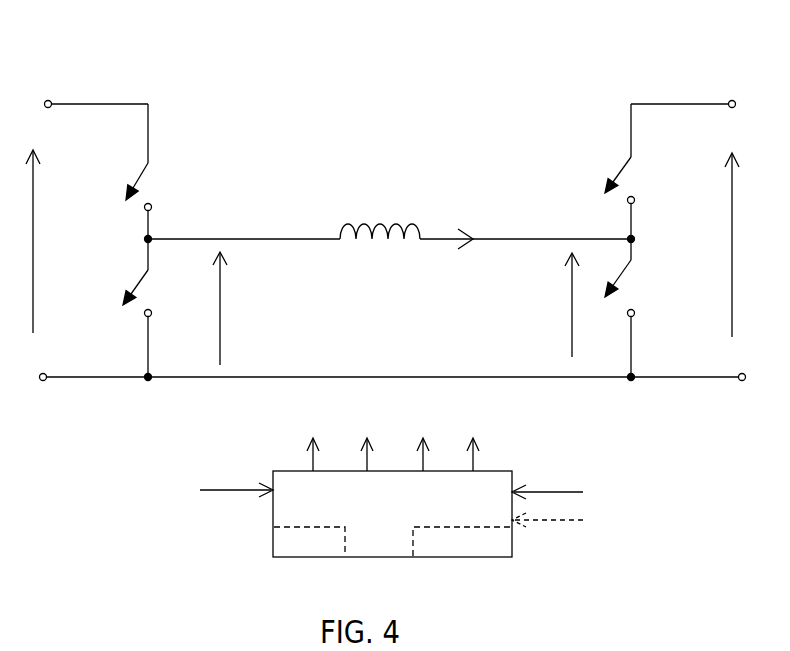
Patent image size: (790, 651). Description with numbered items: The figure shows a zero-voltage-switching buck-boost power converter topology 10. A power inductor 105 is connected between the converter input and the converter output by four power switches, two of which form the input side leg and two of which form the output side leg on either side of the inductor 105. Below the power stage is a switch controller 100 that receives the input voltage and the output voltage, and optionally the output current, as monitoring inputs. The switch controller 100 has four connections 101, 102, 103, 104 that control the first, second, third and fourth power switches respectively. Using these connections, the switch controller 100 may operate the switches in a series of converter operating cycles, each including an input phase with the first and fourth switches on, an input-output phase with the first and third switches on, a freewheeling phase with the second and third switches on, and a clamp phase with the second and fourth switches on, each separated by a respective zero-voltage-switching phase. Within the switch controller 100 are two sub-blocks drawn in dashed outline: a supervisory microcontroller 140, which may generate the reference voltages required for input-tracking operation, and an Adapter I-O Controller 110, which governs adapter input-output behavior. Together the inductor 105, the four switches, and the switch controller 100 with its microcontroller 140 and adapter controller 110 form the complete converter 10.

The buck-boost converter circuit 10 is at (485, 88).
The power inductor 105 is at (397, 208).
The switch controller 100 is at (503, 463).
The connection 101 is at (301, 447).
The connection 102 is at (358, 447).
The connection 103 is at (419, 447).
The connection 104 is at (466, 447).
The supervisory microcontroller 140 is at (309, 541).
The Adapter I-O Controller 110 is at (462, 541).